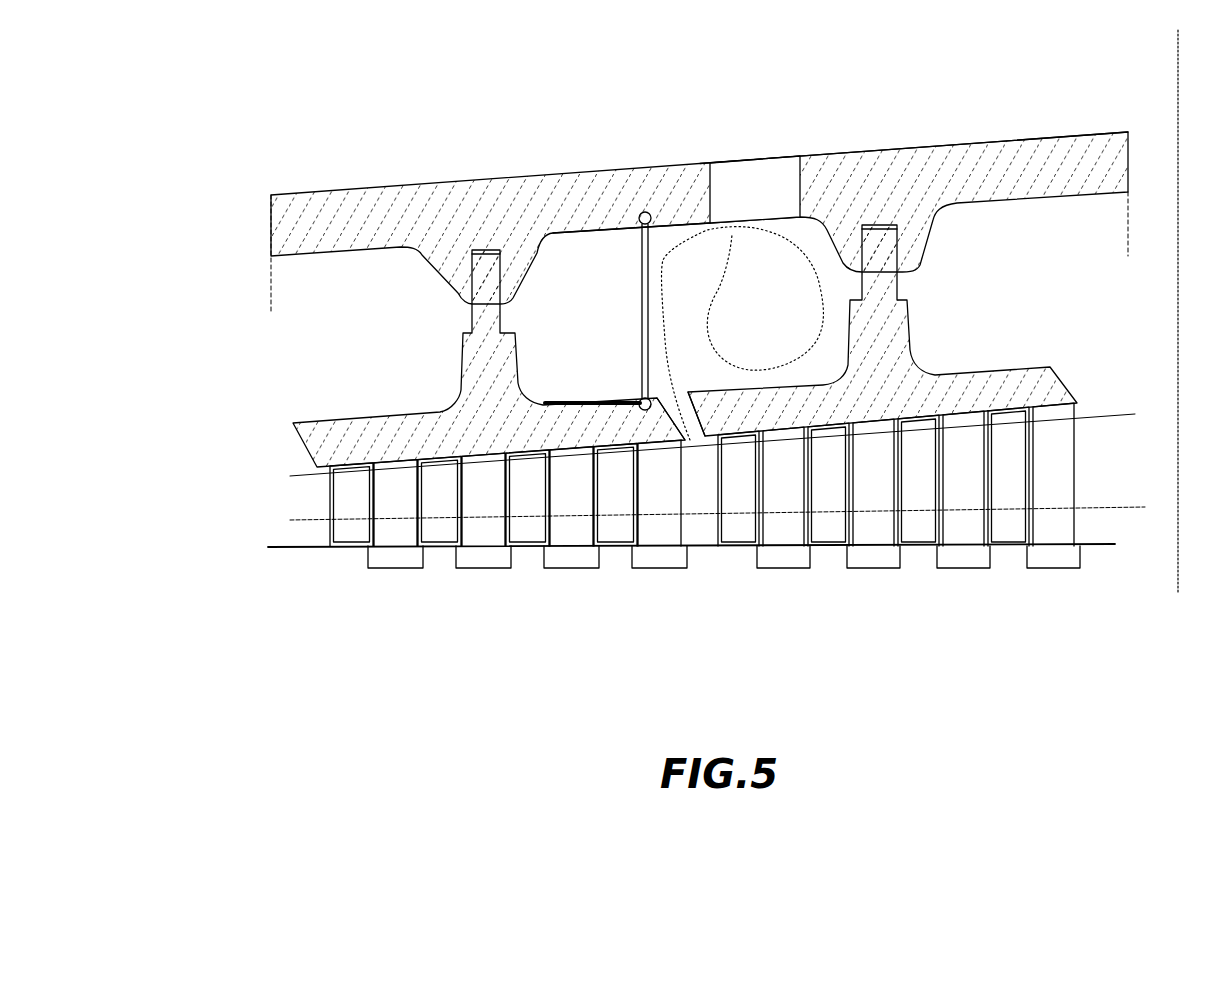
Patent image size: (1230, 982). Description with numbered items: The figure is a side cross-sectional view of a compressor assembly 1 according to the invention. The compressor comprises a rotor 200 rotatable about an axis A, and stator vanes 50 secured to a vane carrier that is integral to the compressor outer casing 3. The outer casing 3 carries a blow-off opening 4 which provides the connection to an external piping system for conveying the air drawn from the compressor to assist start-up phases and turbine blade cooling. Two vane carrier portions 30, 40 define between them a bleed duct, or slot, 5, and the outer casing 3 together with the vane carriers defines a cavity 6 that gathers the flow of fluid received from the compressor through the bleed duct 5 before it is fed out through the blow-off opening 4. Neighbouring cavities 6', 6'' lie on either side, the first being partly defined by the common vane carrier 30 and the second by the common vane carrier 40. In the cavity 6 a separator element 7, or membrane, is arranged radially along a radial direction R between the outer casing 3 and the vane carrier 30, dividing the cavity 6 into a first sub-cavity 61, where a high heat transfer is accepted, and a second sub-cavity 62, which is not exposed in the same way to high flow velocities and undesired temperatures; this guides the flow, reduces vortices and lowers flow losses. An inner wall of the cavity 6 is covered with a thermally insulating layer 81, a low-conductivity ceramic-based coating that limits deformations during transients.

The compressor assembly 1 is at (250, 151).
The compressor outer casing 3 is at (440, 200).
The blow-off opening 4 is at (771, 141).
The bleed duct 5 is at (696, 445).
The cavity 6 is at (620, 157).
The neighbouring cavity 6' is at (363, 289).
The neighbouring cavity 6'' is at (972, 239).
The separator element 7 is at (645, 315).
The vane carrier portion 30 is at (503, 403).
The vane carrier portion 40 is at (900, 328).
The stator vanes 50 is at (535, 503).
The first sub-cavity 61 is at (743, 333).
The second sub-cavity 62 is at (582, 265).
The thermally insulating layer 81 is at (571, 404).
The rotor 200 is at (323, 563).
The axis A is at (717, 521).
The radial direction R is at (1195, 311).